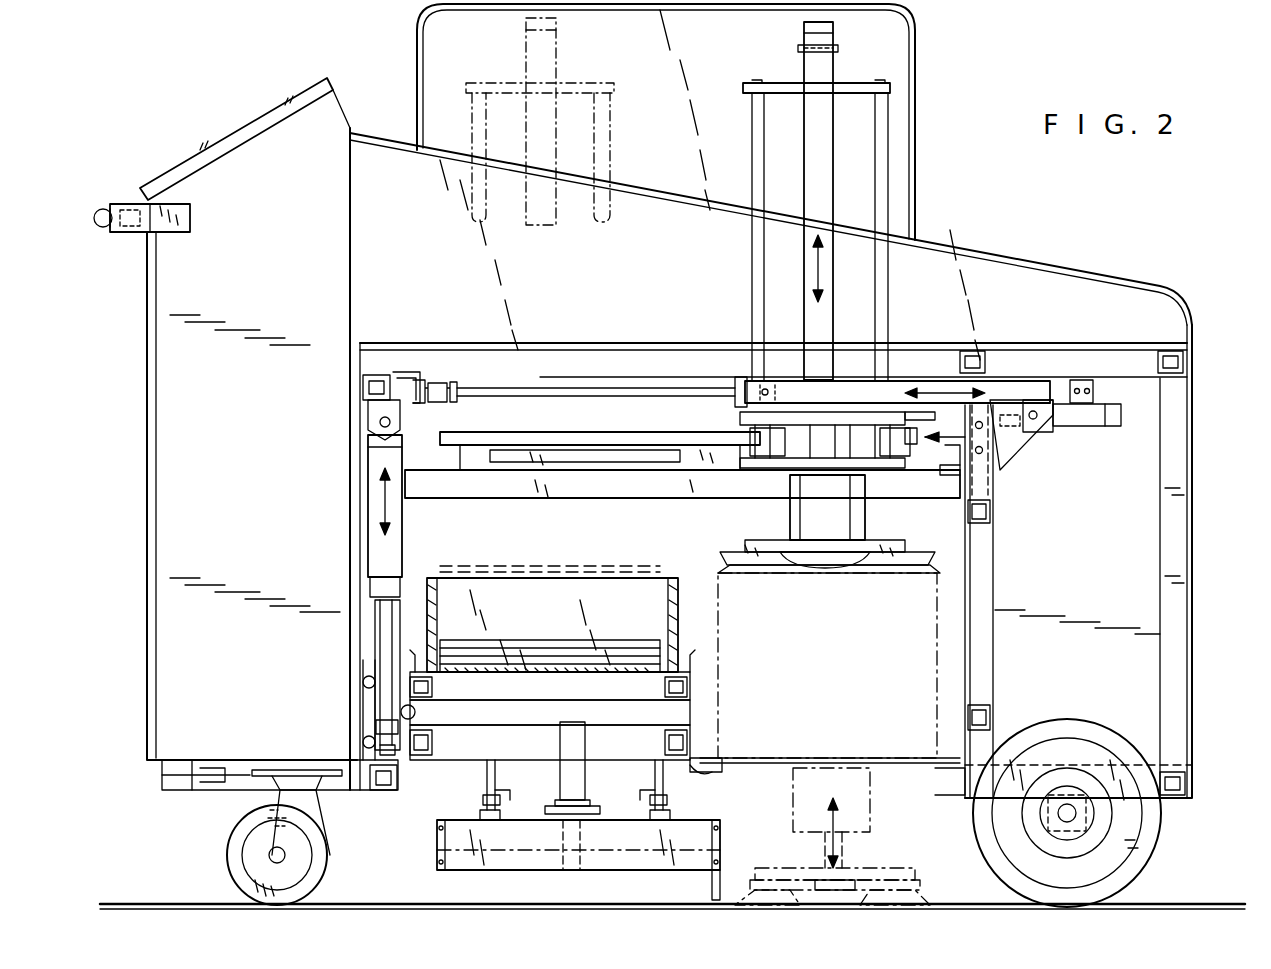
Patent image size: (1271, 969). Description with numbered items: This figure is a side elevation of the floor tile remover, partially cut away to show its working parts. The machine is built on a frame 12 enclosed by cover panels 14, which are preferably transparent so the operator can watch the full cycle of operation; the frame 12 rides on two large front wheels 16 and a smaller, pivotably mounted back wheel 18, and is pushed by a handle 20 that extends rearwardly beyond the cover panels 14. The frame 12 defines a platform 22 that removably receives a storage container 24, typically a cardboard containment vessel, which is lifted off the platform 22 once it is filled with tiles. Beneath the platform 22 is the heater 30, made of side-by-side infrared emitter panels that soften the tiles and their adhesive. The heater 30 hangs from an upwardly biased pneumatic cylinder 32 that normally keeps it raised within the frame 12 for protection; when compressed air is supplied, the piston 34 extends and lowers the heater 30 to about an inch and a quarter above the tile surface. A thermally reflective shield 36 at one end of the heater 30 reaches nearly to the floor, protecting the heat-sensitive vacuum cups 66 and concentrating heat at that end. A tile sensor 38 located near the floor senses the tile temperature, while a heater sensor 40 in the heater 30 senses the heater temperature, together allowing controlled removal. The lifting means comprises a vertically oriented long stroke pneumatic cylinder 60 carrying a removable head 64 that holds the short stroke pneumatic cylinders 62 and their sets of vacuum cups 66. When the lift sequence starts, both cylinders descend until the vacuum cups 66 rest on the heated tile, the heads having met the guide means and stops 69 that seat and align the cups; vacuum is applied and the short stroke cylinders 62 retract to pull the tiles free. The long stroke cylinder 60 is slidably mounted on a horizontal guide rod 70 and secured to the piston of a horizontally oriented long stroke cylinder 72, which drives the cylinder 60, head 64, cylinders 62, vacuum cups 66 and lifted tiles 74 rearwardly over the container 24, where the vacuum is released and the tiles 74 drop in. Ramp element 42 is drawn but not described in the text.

The frame 12 is at (1178, 625).
The cover panels 14 is at (1052, 262).
The front wheels 16 is at (1158, 838).
The back wheel 18 is at (228, 848).
The handle 20 is at (128, 235).
The platform 22 is at (700, 660).
The storage container 24 is at (463, 600).
The heater 30 is at (430, 840).
The pneumatic cylinder 32 is at (372, 550).
The piston 34 is at (385, 642).
The thermally reflective shield 36 is at (720, 880).
The tile sensor 38 is at (585, 870).
The heater sensor 40 is at (530, 862).
The ramp 42 is at (190, 160).
The long stroke pneumatic cylinder 60 is at (545, 132).
The short stroke pneumatic cylinders 62 is at (808, 520).
The head 64 is at (1047, 410).
The vacuum cups 66 is at (920, 570).
The guide means and stops 69 is at (726, 772).
The horizontal guide rod 70 is at (598, 440).
The horizontally oriented long stroke cylinder 72 is at (1012, 385).
The lifted tiles 74 is at (560, 560).